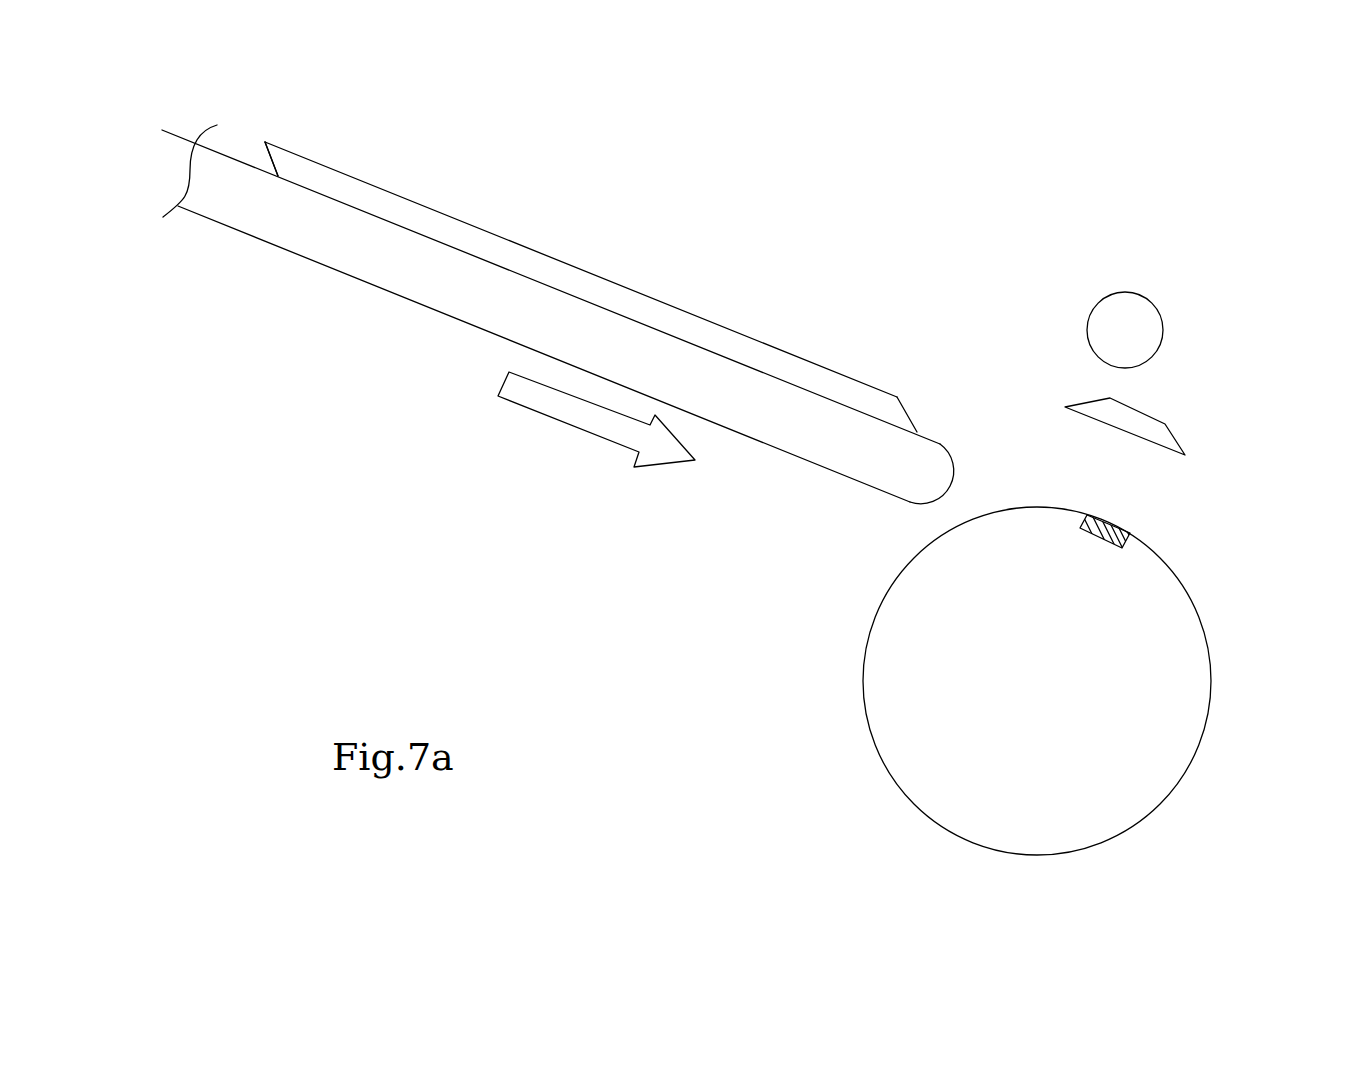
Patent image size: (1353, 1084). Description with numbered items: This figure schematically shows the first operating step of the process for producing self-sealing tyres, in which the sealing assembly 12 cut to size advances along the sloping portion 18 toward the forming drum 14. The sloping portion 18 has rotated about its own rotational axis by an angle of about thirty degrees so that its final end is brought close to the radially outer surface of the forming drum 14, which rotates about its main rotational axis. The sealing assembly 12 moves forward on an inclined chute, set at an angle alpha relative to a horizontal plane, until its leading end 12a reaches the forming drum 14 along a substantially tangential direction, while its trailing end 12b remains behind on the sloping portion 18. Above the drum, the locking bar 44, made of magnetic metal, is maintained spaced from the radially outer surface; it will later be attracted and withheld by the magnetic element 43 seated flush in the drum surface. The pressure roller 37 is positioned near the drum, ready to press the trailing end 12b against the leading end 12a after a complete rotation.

The sealing assembly 12 is at (683, 305).
The leading end 12a is at (887, 402).
The trailing end 12b is at (292, 165).
The forming drum 14 is at (850, 662).
The sloping portion 18 is at (325, 289).
The pressure roller 37 is at (1163, 307).
The magnetic element 43 is at (1122, 528).
The locking bar 44 is at (1177, 430).